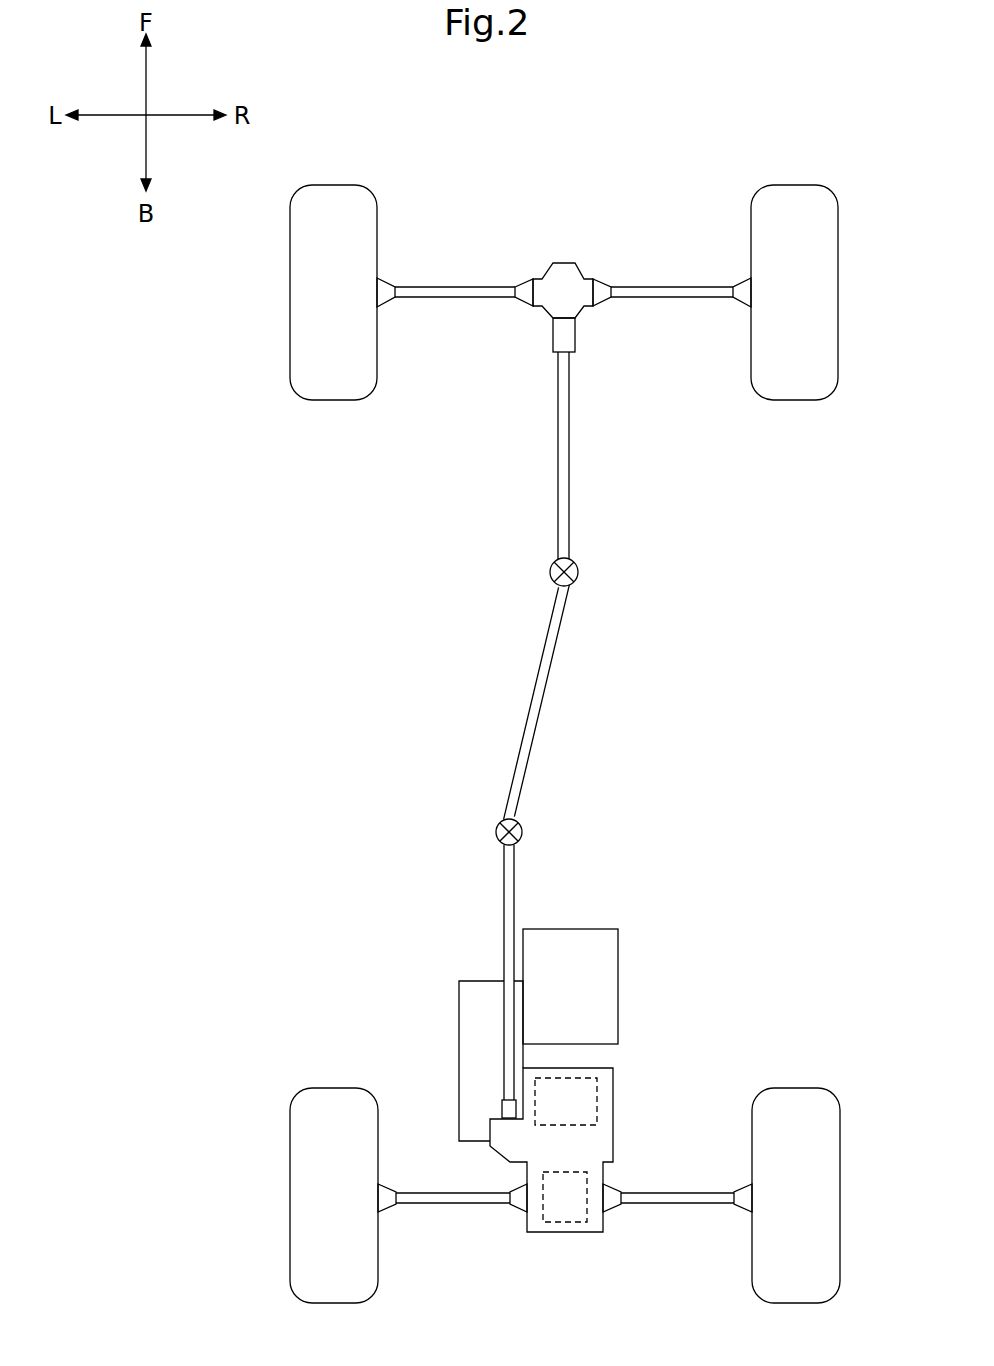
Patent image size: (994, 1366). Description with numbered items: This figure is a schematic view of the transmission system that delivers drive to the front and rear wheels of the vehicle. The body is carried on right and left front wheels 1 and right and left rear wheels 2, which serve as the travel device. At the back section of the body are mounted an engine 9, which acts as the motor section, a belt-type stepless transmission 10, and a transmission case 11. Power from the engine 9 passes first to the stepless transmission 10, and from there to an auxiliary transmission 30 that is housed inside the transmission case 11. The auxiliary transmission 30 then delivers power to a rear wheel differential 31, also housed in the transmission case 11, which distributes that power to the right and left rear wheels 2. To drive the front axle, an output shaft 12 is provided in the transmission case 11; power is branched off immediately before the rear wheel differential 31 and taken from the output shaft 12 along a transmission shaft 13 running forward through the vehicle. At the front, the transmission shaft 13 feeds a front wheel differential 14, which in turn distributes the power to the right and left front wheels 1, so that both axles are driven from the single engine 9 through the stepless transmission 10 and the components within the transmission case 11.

The front wheels 1 is at (300, 243).
The rear wheels 2 is at (300, 1175).
The engine 9 is at (620, 978).
The belt-type stepless transmission 10 is at (459, 1010).
The transmission case 11 is at (608, 1142).
The output shaft 12 is at (500, 1107).
The transmission shaft 13 is at (568, 423).
The front wheel differential 14 is at (563, 272).
The auxiliary transmission 30 is at (598, 1099).
The rear wheel differential 31 is at (565, 1222).